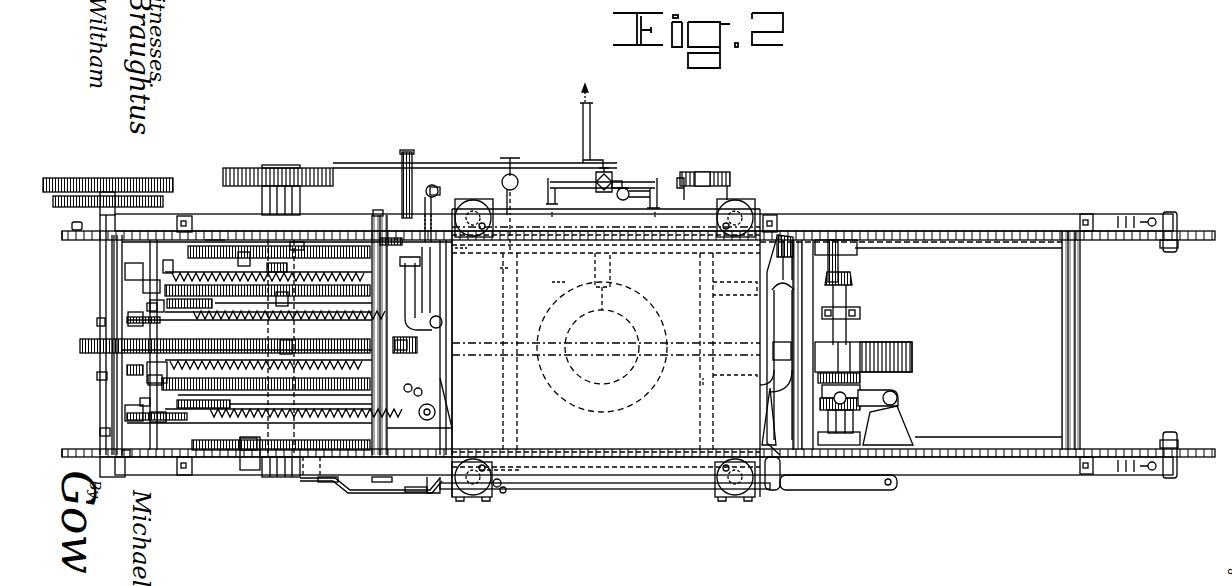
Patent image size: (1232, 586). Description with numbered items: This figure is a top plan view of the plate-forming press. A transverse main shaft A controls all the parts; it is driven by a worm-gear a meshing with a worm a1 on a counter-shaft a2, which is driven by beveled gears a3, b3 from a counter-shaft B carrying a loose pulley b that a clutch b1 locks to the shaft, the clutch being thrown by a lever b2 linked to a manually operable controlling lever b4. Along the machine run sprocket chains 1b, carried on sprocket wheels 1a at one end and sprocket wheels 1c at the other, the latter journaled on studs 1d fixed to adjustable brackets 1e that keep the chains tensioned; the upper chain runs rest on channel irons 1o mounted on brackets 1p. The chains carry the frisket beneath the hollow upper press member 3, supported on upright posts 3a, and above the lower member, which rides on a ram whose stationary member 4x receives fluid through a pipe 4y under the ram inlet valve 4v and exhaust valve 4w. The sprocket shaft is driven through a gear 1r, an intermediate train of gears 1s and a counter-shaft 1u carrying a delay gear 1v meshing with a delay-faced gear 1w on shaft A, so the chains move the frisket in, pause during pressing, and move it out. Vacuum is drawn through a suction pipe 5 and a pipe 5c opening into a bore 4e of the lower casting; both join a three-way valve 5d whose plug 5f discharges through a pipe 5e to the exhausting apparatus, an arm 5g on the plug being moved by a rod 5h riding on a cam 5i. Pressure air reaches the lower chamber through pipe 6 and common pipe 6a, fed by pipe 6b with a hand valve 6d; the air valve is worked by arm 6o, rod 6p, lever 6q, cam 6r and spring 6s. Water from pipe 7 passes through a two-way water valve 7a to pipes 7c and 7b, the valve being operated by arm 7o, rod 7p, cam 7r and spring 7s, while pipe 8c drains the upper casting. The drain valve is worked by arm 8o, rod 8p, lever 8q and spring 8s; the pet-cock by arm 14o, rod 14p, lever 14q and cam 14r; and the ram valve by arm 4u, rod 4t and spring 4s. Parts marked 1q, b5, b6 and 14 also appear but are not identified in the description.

The channel irons 1o is at (335, 235).
The sprocket chains 1b is at (958, 233).
The sprocket wheels 1c is at (1178, 242).
The studs 1d is at (1170, 250).
The brackets 1e is at (1138, 223).
The brackets 1p is at (185, 217).
The upper press member 3 is at (606, 353).
The stationary ram member 4x is at (555, 378).
The bore 4e is at (703, 385).
The pipe 4y is at (552, 282).
The ram exhaust valve 4w is at (502, 268).
The arm 4u is at (457, 250).
The ram inlet valve 4v is at (518, 470).
The upright posts 3a is at (476, 203).
The beveled gear b3 is at (595, 487).
The arm 14o is at (505, 483).
The gear 1r is at (88, 183).
The intermediate train of gears 1s is at (62, 183).
The sprocket wheels 1a is at (117, 193).
The bolt 1q is at (100, 247).
The spring 4s is at (172, 250).
The rod 4t is at (228, 243).
The cam 7r is at (145, 290).
The lever 8q is at (143, 385).
The cam 14r is at (228, 457).
The spring 7s is at (240, 327).
The rod 7p is at (262, 317).
The spring 8s is at (270, 378).
The spring 6s is at (257, 415).
The cam 5i is at (243, 170).
The main shaft A is at (283, 478).
The worm-gear a is at (210, 240).
The worm a1 is at (297, 243).
The water pipe 7 is at (402, 155).
The pipe 7c is at (420, 187).
The counter-shaft a2 is at (395, 238).
The pipe 7b is at (378, 210).
The water valve 7a is at (415, 283).
The arm 7o is at (447, 318).
The gear 1w is at (102, 372).
The rod 6p is at (420, 407).
The arm 8o is at (412, 383).
The arm 6o is at (440, 428).
The hand valve 6d is at (512, 217).
The pipe 6b is at (508, 158).
The rod 5h is at (463, 163).
The pipe 5e is at (583, 122).
The suction pipe 5 is at (563, 180).
The valve plug 5f is at (603, 168).
The arm 5g is at (619, 179).
The three-way valve 5d is at (619, 182).
The pipe 5c is at (655, 193).
The pipe 6 is at (770, 305).
The common pipe 6a is at (772, 352).
The pipe 8c is at (782, 473).
The beveled gear a3 is at (855, 262).
The counter-shaft B is at (848, 315).
The loose pulley b is at (918, 355).
The clutch b1 is at (899, 397).
The lever b2 is at (900, 423).
The bar b5 is at (387, 485).
The bar clip b6 is at (348, 485).
The controlling lever b4 is at (420, 490).
The rod 14p is at (393, 484).
The lever 14q is at (251, 478).
The stop 14 is at (150, 307).
The delay gear 1v is at (97, 322).
The counter-shaft 1u is at (100, 375).
The rod 8p is at (143, 402).
The lever 6q is at (102, 432).
The cam 6r is at (125, 457).